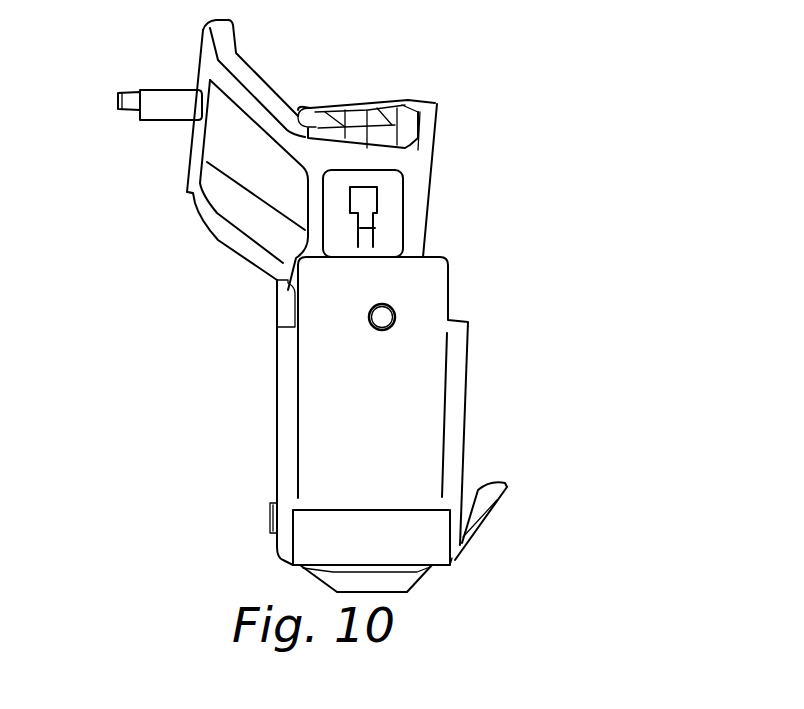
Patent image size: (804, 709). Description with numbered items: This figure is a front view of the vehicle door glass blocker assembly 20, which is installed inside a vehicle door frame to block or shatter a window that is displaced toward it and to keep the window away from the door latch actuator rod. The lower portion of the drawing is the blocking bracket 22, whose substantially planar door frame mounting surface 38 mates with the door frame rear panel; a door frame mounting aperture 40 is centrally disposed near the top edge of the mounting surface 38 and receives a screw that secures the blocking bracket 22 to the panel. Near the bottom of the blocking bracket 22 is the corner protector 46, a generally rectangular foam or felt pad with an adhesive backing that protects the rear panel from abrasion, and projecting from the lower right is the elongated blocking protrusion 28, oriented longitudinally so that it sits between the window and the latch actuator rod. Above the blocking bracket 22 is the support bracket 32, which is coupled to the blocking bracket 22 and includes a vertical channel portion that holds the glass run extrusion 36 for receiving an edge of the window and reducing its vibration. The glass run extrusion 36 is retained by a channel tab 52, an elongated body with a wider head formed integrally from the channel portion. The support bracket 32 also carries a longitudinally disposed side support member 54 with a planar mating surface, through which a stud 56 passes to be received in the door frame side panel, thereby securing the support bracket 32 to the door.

The vehicle door glass blocker assembly 20 is at (587, 157).
The blocking bracket 22 is at (246, 431).
The blocking protrusion 28 is at (488, 493).
The support bracket 32 is at (430, 219).
The glass run extrusion 36 is at (411, 103).
The door frame mounting surface 38 is at (402, 382).
The door frame mounting aperture 40 is at (395, 306).
The corner protector 46 is at (413, 542).
The channel tab 52 is at (367, 222).
The side support member 54 is at (187, 167).
The stud 56 is at (162, 103).